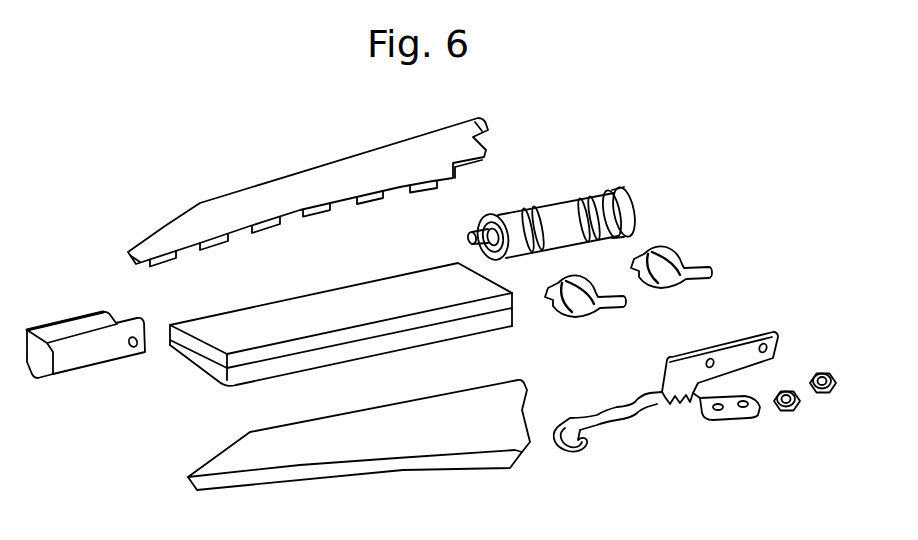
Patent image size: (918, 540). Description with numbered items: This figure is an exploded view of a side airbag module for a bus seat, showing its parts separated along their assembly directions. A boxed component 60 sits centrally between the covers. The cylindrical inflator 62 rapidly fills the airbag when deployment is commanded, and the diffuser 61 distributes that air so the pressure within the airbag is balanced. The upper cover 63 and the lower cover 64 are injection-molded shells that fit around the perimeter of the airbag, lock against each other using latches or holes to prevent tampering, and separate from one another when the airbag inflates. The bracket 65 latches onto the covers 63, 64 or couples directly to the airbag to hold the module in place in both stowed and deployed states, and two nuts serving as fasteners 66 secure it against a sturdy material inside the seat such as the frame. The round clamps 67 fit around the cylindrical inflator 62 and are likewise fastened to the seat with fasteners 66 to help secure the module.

The housing box 60 is at (366, 300).
The diffuser 61 is at (78, 322).
The inflator 62 is at (562, 215).
The upper cover 63 is at (257, 197).
The lower cover 64 is at (240, 458).
The bracket 65 is at (612, 430).
The fasteners 66 is at (797, 415).
The clamps 67 is at (598, 318).